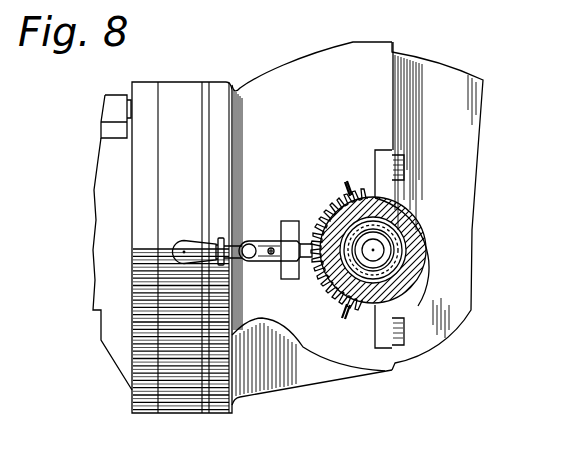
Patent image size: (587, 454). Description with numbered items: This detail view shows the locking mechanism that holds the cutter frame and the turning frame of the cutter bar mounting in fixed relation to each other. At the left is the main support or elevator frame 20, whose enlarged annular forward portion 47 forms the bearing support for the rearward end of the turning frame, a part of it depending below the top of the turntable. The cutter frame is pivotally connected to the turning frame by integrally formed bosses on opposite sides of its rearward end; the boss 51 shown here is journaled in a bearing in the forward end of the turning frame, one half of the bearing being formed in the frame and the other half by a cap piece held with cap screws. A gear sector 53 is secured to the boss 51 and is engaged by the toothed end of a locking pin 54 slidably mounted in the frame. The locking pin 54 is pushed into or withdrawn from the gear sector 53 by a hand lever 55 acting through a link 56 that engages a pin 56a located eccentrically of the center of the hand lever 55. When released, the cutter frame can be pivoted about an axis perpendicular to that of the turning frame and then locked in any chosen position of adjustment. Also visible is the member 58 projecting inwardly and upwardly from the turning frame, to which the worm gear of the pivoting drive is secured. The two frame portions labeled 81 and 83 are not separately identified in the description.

The main support frame 20 is at (118, 355).
The enlarged annular forward portion 47 is at (132, 400).
The body casing 81 is at (322, 54).
The body casing right portion 83 is at (464, 60).
The member 58 is at (396, 158).
The boss 51 is at (425, 244).
The gear sector 53 is at (318, 206).
The locking pin 54 is at (308, 242).
The hand lever 55 is at (190, 242).
The link 56 is at (265, 264).
The pin 56a is at (252, 242).